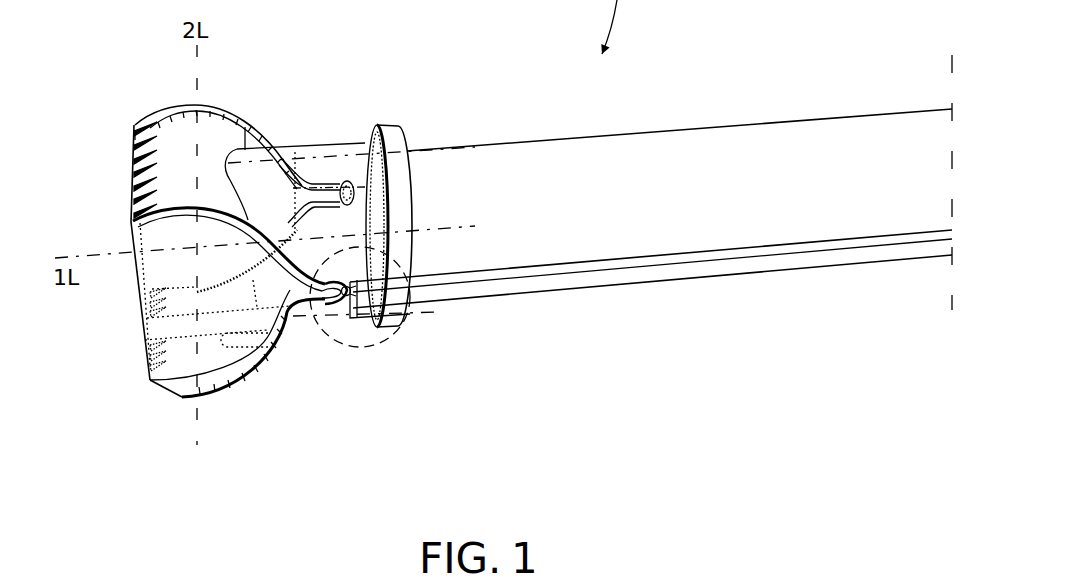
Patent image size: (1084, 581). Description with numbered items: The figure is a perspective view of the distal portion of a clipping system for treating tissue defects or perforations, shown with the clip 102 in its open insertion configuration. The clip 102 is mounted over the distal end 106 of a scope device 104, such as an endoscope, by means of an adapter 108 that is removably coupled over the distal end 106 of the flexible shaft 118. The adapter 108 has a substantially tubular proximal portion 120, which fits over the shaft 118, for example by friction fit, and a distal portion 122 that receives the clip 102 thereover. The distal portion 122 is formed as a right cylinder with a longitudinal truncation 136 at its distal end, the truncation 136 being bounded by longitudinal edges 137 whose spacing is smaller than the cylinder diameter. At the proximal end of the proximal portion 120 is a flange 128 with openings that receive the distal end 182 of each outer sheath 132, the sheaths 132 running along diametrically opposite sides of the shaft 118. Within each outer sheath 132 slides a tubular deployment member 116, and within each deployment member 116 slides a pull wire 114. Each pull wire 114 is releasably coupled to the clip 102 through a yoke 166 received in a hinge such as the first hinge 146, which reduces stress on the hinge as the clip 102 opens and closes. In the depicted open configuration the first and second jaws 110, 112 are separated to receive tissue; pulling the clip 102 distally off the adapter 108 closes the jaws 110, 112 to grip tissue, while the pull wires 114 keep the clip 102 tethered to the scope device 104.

The clip 102 is at (258, 100).
The scope device 104 is at (810, 100).
The distal end 106 is at (467, 173).
The adapter 108 is at (304, 160).
The first jaw 110 is at (167, 133).
The second jaw 112 is at (195, 398).
The pull wire 114 is at (353, 292).
The tubular deployment member 116 is at (383, 287).
The shaft 118 is at (650, 148).
The proximal portion 120 is at (350, 125).
The distal portion 122 is at (163, 403).
The flange 128 is at (395, 207).
The outer sheath 132 is at (695, 256).
The longitudinal truncation 136 is at (137, 273).
The longitudinal edges 137 is at (133, 185).
The first hinge 146 is at (343, 294).
The yoke 166 is at (324, 298).
The distal end 182 is at (437, 282).